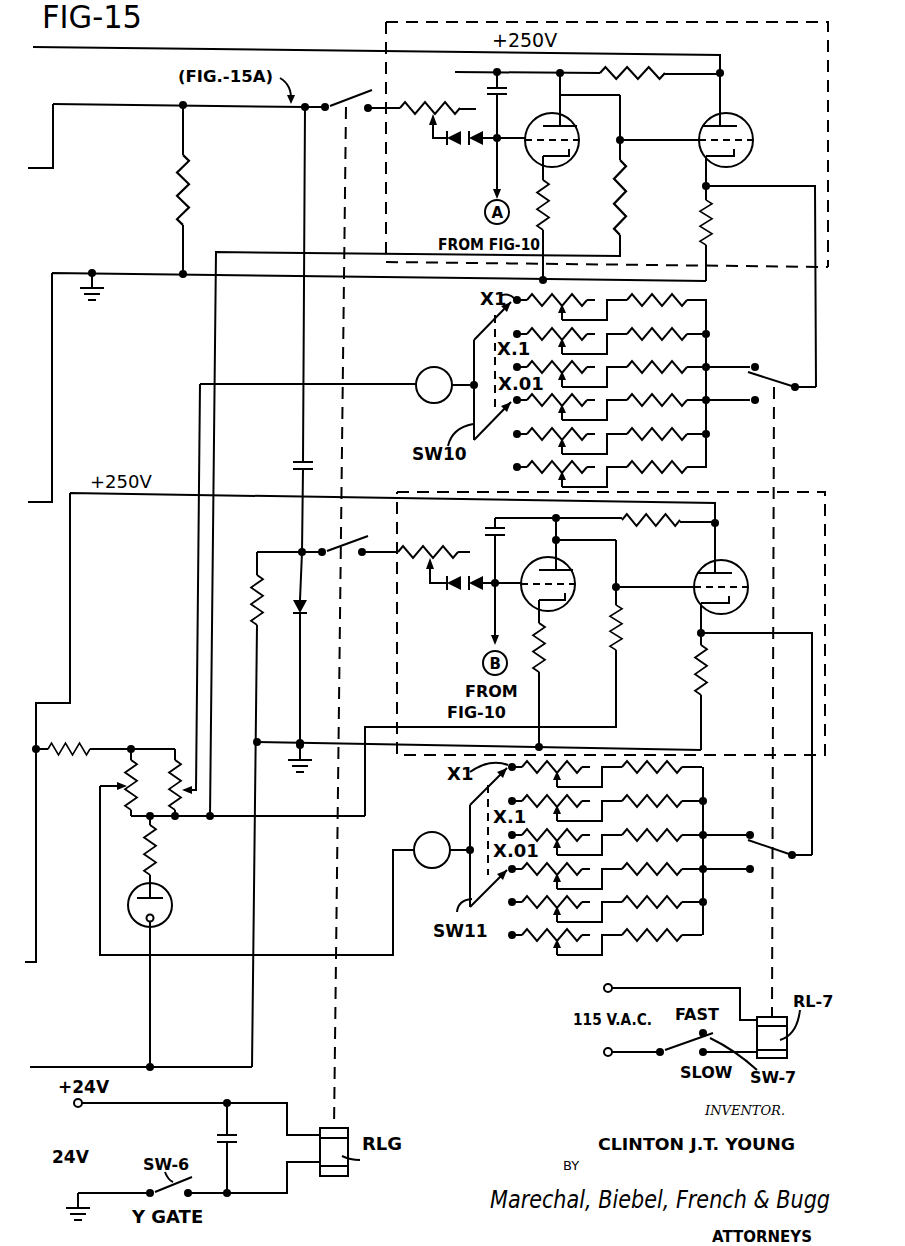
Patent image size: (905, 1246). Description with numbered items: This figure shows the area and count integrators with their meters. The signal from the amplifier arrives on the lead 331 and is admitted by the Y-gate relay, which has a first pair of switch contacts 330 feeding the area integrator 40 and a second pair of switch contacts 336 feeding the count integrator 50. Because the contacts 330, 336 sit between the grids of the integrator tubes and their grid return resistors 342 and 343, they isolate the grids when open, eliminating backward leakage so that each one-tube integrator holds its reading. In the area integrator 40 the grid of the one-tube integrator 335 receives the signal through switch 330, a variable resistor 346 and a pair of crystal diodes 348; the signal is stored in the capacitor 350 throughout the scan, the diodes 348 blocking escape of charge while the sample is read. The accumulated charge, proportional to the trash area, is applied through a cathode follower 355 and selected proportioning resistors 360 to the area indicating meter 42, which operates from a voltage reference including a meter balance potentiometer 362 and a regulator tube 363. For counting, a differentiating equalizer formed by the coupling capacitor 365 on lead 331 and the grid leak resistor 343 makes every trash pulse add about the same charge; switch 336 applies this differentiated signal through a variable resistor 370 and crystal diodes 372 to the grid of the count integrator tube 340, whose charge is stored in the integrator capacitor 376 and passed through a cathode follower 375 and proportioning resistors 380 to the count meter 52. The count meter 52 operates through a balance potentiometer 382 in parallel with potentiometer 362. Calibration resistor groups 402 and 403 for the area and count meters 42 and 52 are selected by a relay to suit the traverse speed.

The area integrator 40 is at (383, 31).
The count integrator 50 is at (813, 492).
The first pair of switch contacts 330 is at (350, 95).
The lead 331 is at (91, 107).
The one-tube integrator 335 is at (561, 176).
The second pair of switch contacts 336 is at (356, 534).
The count integrator tube 340 is at (557, 617).
The grid return resistor 342 is at (190, 178).
The grid leak resistor 343 is at (256, 573).
The variable resistor 346 is at (433, 113).
The pair of crystal diodes 348 is at (466, 147).
The capacitor 350 is at (506, 89).
The cathode follower 355 is at (740, 127).
The proportioning resistors 360 is at (707, 440).
The meter balance potentiometer 362 is at (186, 765).
The regulator tube 363 is at (172, 906).
The coupling capacitor 365 is at (290, 467).
The variable resistor 370 is at (430, 557).
The crystal diodes 372 is at (466, 592).
The cathode follower 375 is at (740, 562).
The integrator capacitor 376 is at (483, 531).
The proportioning resistors 380 is at (705, 912).
The balance potentiometer 382 is at (100, 807).
The calibration resistor group 402 is at (708, 350).
The calibration resistor group 403 is at (705, 802).
The area indicating meter 42 is at (425, 365).
The count meter 52 is at (432, 870).